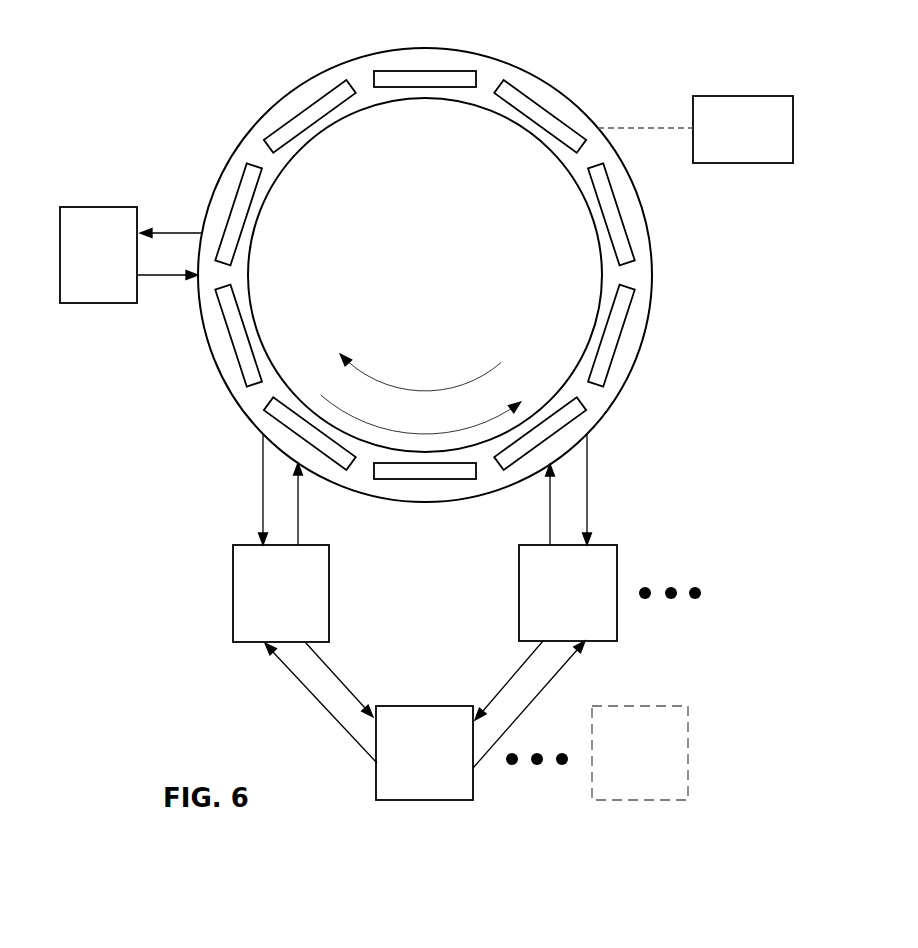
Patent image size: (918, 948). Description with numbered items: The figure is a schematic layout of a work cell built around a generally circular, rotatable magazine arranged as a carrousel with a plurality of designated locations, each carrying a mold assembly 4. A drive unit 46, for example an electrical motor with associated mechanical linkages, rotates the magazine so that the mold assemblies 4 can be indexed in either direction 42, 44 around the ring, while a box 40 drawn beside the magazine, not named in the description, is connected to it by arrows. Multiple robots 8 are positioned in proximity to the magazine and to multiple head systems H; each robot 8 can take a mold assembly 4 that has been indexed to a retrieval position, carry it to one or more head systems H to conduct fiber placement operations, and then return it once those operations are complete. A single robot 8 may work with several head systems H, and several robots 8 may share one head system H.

The mold assembly 4 is at (392, 72).
The robot 8 is at (233, 565).
The control unit 40 is at (80, 207).
The direction 42 is at (370, 373).
The direction 44 is at (332, 400).
The drive unit 46 is at (712, 96).
The head system H is at (376, 789).